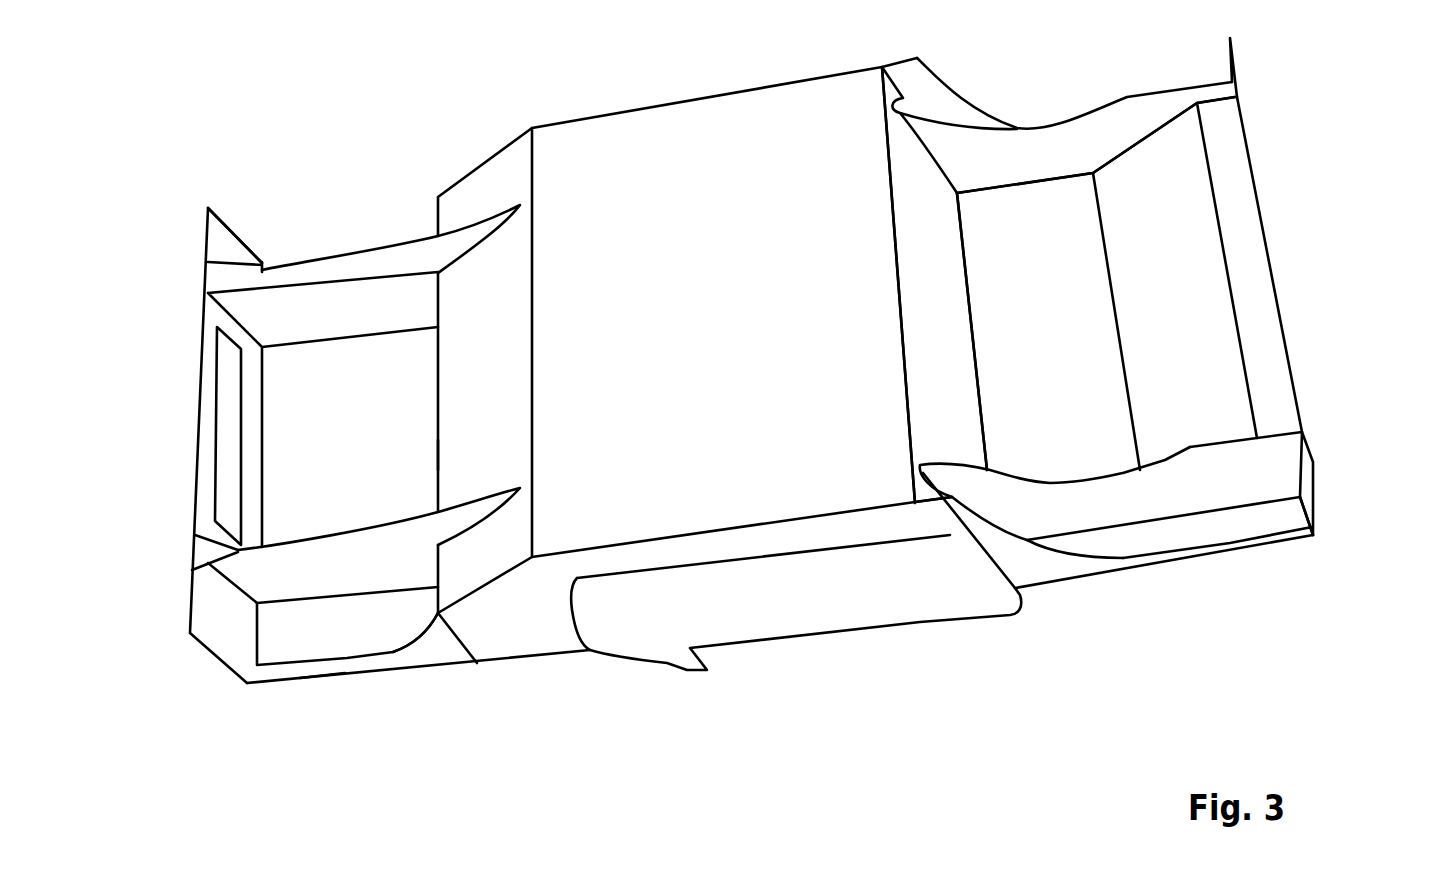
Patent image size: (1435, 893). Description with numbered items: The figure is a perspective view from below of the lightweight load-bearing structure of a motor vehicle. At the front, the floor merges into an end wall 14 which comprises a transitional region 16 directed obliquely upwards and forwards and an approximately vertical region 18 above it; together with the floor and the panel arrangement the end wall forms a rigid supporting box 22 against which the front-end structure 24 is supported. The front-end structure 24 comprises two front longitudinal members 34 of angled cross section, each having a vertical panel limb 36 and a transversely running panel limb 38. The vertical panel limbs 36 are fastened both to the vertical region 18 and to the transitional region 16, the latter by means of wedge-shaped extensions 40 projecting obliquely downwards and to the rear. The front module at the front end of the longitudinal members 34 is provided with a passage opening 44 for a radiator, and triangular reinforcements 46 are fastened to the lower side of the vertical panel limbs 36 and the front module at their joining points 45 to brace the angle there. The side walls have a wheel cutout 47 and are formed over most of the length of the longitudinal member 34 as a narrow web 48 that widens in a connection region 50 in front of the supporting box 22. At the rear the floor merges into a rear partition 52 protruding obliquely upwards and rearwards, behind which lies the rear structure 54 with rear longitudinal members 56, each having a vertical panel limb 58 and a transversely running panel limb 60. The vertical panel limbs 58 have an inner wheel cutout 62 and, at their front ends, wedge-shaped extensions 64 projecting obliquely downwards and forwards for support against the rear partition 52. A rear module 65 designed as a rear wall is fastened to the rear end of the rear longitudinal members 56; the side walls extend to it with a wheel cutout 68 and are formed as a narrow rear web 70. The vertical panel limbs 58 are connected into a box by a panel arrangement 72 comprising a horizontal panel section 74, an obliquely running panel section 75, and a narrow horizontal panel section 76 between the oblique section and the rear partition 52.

The end wall 14 is at (410, 398).
The transitional region 16 is at (498, 417).
The vertical region 18 is at (433, 452).
The supporting box 22 is at (540, 308).
The front-end structure 24 is at (323, 172).
The front longitudinal member 34 is at (317, 715).
The vertical panel limb 36 is at (315, 553).
The transversely running panel limb 38 is at (337, 645).
The wedge-shaped extension 40 is at (473, 230).
The passage opening 44 is at (230, 407).
The joining point 45 is at (225, 585).
The triangular reinforcement 46 is at (207, 553).
The wheel cutout 47 is at (366, 716).
The narrow web 48 is at (276, 673).
The connection region 50 is at (455, 643).
The rear partition 52 is at (949, 362).
The rear structure 54 is at (1090, 685).
The rear longitudinal member 56 is at (1272, 585).
The vertical panel limb 58 is at (1275, 470).
The transversely running panel limb 60 is at (1158, 537).
The inner wheel cutout 62 is at (1070, 117).
The wedge-shaped extension 64 is at (957, 483).
The rear module 65 is at (1310, 185).
The wheel cutout 68 is at (1089, 556).
The rear web 70 is at (1220, 550).
The panel arrangement 72 is at (1035, 172).
The horizontal panel section 74 is at (1064, 296).
The obliquely running panel section 75 is at (1194, 308).
The narrow panel section 76 is at (1262, 325).